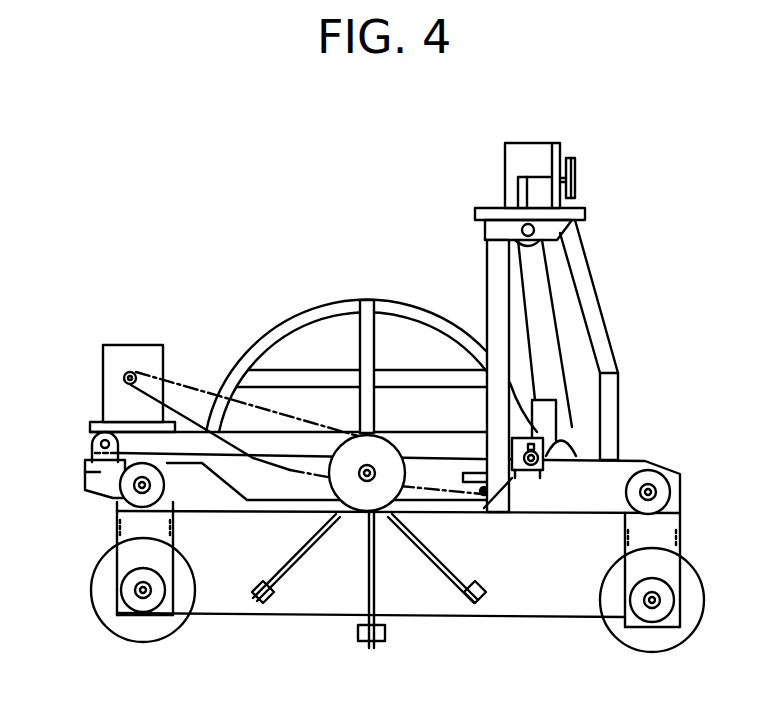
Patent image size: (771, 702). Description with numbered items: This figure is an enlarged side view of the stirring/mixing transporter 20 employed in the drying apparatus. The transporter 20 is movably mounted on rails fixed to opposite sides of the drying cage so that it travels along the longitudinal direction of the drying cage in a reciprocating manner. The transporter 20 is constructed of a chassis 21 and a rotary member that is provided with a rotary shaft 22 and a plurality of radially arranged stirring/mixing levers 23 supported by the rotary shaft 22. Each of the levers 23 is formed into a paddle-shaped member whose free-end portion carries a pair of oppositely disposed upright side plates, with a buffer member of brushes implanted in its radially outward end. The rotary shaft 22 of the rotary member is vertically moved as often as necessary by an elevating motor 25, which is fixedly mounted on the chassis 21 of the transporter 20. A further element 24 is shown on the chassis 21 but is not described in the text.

The stirring/mixing transporter 20 is at (614, 302).
The chassis 21 is at (97, 478).
The rotary shaft 22 is at (368, 483).
The stirring/mixing levers 23 is at (378, 582).
The pulley housing 24 is at (138, 355).
The elevating motor 25 is at (530, 155).